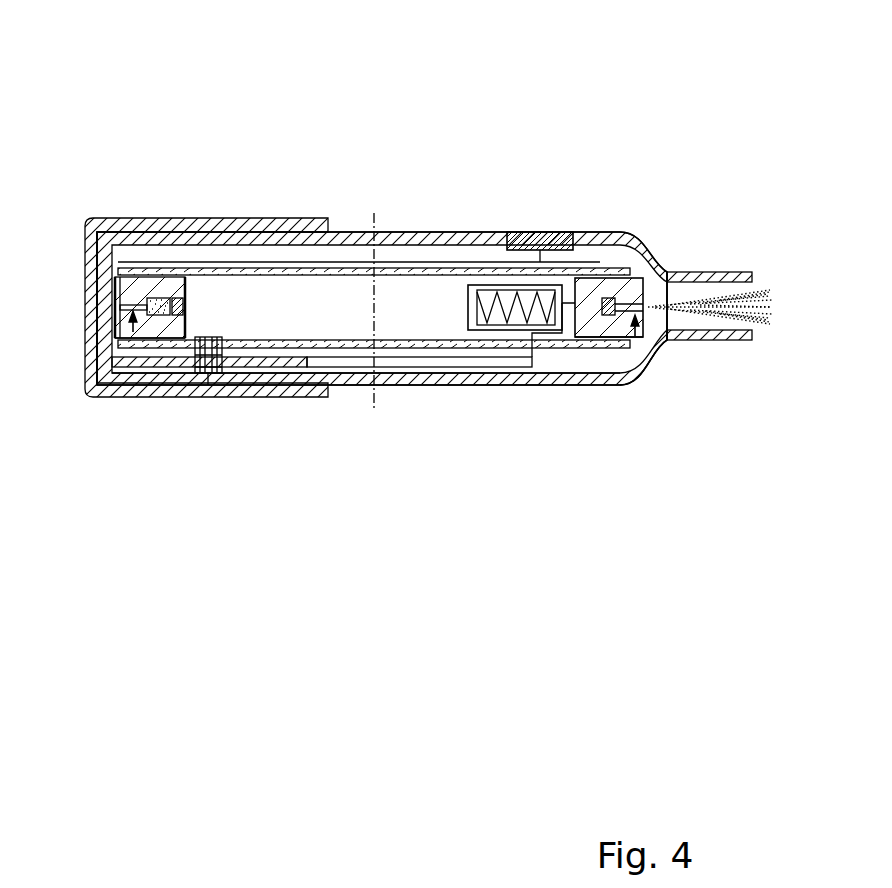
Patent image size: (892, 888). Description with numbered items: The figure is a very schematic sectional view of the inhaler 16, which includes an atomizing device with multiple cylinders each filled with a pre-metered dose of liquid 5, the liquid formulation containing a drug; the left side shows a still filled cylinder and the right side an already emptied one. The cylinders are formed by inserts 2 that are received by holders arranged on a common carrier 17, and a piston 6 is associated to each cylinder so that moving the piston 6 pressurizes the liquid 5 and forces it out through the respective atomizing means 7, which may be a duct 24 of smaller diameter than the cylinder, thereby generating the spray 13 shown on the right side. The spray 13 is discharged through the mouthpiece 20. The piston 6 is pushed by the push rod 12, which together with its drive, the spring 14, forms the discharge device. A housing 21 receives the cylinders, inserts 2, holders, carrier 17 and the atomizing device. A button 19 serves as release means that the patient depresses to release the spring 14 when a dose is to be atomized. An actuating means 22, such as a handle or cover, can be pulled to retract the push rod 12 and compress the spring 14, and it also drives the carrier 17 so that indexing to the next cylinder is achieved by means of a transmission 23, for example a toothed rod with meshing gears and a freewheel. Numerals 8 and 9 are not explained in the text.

The insert 2 is at (153, 287).
The liquid 5 is at (163, 302).
The piston 6 is at (175, 337).
The atomizing means 7 is at (132, 322).
The seal 8 is at (184, 290).
The housing wall 9 is at (112, 324).
The push rod 12 is at (572, 268).
The spray 13 is at (763, 320).
The spring 14 is at (489, 300).
The inhaler 16 is at (303, 200).
The carrier 17 is at (454, 347).
The button 19 is at (533, 235).
The mouthpiece 20 is at (745, 340).
The housing 21 is at (530, 385).
The actuating means 22 is at (293, 390).
The transmission 23 is at (227, 362).
The duct 24 is at (126, 290).